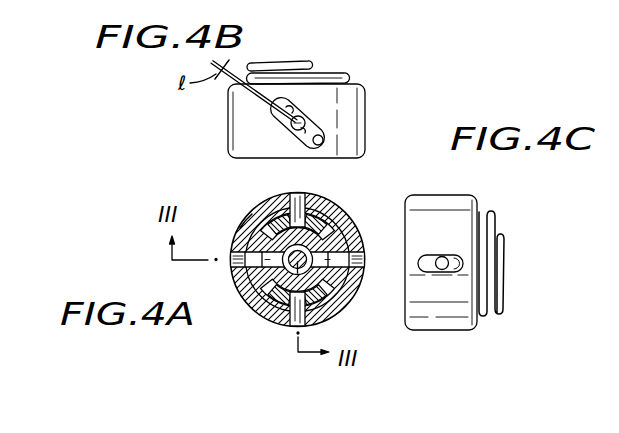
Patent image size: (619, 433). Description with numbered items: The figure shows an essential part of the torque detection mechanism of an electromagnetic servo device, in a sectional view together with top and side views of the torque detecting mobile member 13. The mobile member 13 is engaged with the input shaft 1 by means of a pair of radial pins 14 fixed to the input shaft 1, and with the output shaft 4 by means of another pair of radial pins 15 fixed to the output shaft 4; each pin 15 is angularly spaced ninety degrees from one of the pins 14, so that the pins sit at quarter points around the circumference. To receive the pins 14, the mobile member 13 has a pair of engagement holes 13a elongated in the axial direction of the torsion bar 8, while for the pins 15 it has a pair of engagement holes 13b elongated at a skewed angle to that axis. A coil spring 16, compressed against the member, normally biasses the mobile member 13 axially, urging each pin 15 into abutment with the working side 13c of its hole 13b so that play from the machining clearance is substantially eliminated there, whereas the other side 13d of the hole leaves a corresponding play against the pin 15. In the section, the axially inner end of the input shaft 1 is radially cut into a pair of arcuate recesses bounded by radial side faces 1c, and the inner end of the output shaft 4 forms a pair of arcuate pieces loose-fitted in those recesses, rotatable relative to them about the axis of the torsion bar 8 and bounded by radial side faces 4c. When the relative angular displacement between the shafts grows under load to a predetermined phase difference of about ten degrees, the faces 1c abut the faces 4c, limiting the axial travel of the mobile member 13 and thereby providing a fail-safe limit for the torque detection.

In FIG. 4A, the input shaft 1 is at (258, 280).
In FIG. 4A, the radial side faces 1c is at (268, 232).
In FIG. 4A, the output shaft 4 is at (324, 200).
In FIG. 4A, the radial side faces 4c is at (266, 226).
In FIG. 4A, the torsion bar 8 is at (353, 305).
In FIG. 4B, the mobile member 13 is at (358, 118).
In FIG. 4A, the mobile member 13 is at (250, 234).
In FIG. 4C, the mobile member 13 is at (452, 205).
In FIG. 4C, the engagement holes 13a is at (462, 265).
In FIG. 4B, the engagement holes 13b is at (321, 136).
In FIG. 4B, the working side 13c is at (290, 104).
In FIG. 4B, the other side 13d is at (300, 133).
In FIG. 4A, the radial pins 14 is at (235, 257).
In FIG. 4C, the radial pins 14 is at (440, 258).
In FIG. 4B, the radial pins 15 is at (311, 120).
In FIG. 4A, the radial pins 15 is at (298, 193).
In FIG. 4B, the coil spring 16 is at (283, 63).
In FIG. 4C, the coil spring 16 is at (498, 226).